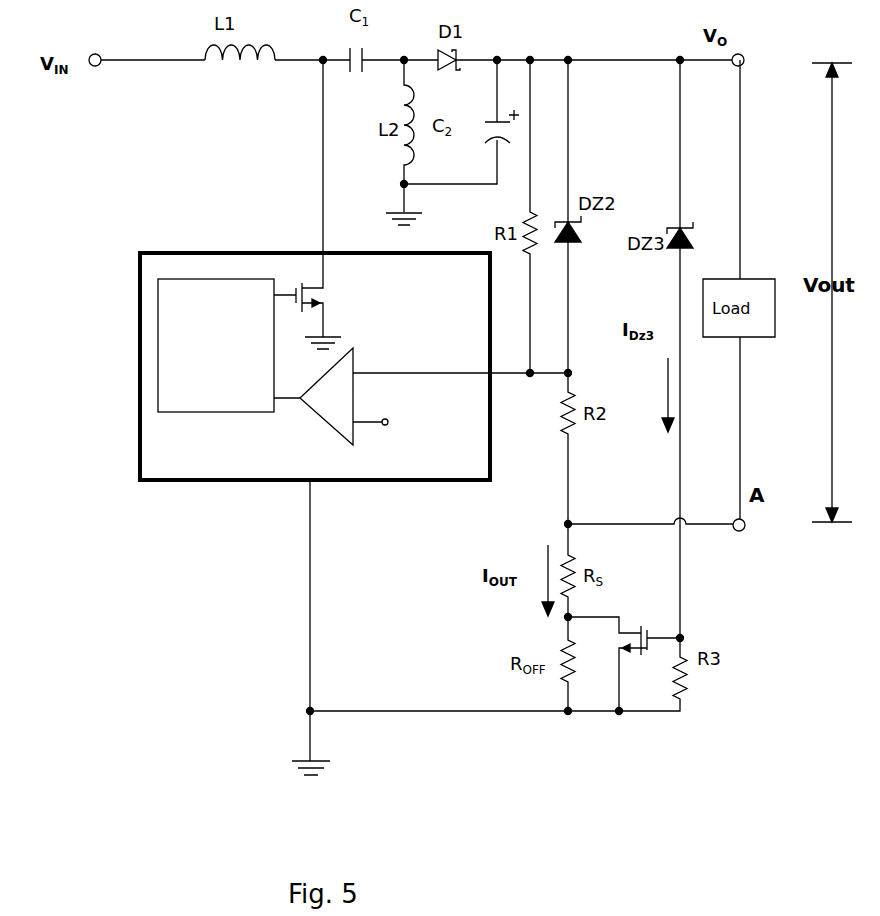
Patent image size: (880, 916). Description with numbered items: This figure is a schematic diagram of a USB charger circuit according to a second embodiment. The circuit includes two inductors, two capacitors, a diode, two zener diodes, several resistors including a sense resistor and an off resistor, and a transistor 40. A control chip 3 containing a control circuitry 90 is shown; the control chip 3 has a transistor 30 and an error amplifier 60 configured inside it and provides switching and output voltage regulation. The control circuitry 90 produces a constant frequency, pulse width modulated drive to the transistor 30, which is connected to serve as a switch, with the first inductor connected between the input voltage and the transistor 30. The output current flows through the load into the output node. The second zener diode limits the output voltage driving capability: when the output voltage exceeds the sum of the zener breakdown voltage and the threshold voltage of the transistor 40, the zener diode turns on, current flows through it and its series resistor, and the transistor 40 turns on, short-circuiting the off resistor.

The control circuitry 90 is at (322, 385).
The transistor 30 is at (310, 282).
The error amplifier 60 is at (353, 435).
The transistor 40 is at (643, 618).
The control chip 3 is at (216, 366).